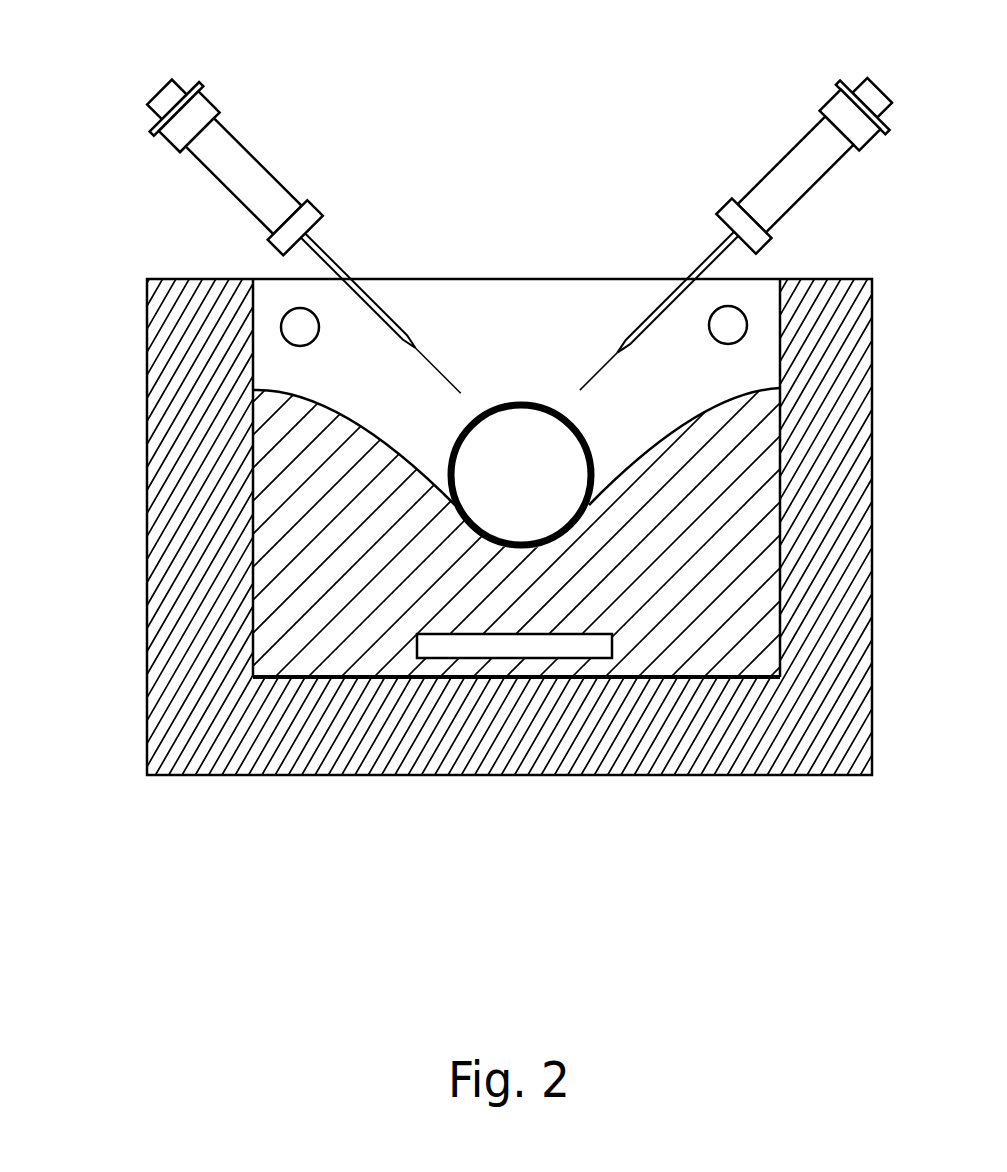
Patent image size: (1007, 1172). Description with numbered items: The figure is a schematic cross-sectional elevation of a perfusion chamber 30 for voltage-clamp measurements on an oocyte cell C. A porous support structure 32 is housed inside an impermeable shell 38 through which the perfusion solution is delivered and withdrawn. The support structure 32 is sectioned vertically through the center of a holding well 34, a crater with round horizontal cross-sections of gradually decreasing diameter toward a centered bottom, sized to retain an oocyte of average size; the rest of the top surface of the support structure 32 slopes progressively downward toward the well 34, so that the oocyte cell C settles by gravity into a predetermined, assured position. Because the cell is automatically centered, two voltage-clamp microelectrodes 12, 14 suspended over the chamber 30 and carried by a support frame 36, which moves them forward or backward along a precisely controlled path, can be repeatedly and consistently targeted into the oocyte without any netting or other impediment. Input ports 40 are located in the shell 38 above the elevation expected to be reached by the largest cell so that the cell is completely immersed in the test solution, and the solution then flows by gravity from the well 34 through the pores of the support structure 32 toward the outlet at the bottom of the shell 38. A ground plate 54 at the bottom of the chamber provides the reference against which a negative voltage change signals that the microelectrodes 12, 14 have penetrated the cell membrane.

The voltage-clamp microelectrode 12 is at (302, 236).
The voltage-clamp microelectrode 14 is at (717, 242).
The perfusion chamber 30 is at (152, 229).
The porous support structure 32 is at (305, 510).
The holding well 34 is at (518, 538).
The support frame 36 is at (227, 128).
The impermeable shell 38 is at (218, 608).
The input ports 40 is at (298, 325).
The ground plate 54 is at (460, 649).
The oocyte cell C is at (587, 440).